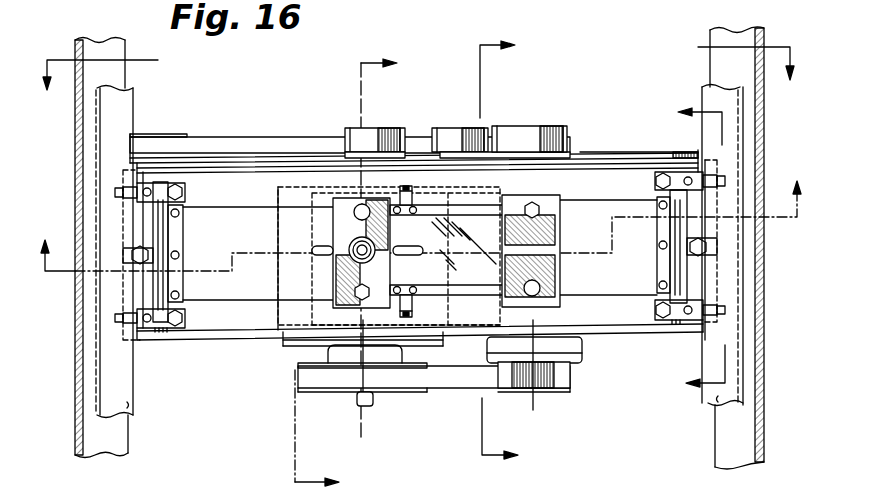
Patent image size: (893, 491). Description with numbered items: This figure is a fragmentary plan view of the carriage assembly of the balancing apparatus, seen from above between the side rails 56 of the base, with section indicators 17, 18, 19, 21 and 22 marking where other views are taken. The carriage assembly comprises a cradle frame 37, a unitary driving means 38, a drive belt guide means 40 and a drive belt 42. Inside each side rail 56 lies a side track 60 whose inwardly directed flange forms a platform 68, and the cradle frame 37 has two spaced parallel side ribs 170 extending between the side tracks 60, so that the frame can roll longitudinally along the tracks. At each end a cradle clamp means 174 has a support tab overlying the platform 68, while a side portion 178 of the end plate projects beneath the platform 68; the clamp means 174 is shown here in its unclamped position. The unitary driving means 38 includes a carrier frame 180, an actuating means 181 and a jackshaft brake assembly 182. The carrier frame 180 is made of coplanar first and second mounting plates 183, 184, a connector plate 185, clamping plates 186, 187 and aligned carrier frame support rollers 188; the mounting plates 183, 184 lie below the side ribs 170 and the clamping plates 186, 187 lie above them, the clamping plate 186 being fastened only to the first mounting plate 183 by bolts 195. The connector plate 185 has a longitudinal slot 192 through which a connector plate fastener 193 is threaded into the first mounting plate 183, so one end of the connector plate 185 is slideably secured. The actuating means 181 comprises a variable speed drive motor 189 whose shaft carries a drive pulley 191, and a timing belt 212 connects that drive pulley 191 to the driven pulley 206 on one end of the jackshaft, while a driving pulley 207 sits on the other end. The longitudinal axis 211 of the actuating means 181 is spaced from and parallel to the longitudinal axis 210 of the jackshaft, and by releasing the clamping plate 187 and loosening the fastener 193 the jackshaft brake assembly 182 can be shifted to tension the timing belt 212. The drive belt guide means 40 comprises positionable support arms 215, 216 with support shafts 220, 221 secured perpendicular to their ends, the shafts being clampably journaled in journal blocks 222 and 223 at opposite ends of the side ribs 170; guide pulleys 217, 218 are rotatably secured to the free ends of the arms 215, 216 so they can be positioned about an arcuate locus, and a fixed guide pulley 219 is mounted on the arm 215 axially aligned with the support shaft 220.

The cradle frame 37 is at (242, 345).
The unitary driving means 38 is at (438, 420).
The drive belt guide means 40 is at (335, 106).
The drive belt 42 is at (252, 141).
The side rails 56 is at (78, 358).
The side tracks 60 is at (110, 383).
The platform 68 is at (130, 408).
The side ribs 170 is at (217, 178).
The cradle clamp means 174 is at (118, 247).
The side portion 178 is at (123, 292).
The carrier frame 180 is at (545, 185).
The actuating means 181 is at (350, 400).
The jackshaft brake assembly 182 is at (596, 345).
The first mounting plate 183 is at (298, 266).
The second mounting plate 184 is at (580, 299).
The connector plate 185 is at (320, 277).
The clamping plate 186 is at (342, 231).
The clamping plate 187 is at (552, 228).
The carrier frame support rollers 188 is at (415, 194).
The variable speed drive motor 189 is at (288, 348).
The drive pulley 191 is at (408, 392).
The slot 192 is at (394, 247).
The connector plate fastener 193 is at (370, 255).
The bolts 195 is at (359, 200).
The driven pulley 206 is at (558, 386).
The driving pulley 207 is at (520, 128).
The longitudinal axis 210 is at (537, 398).
The longitudinal axis 211 is at (362, 422).
The timing belt 212 is at (475, 380).
The support arm 215 is at (272, 160).
The support arm 216 is at (636, 153).
The guide pulley 217 is at (387, 128).
The guide pulley 218 is at (457, 128).
The fixed guide pulley 219 is at (155, 134).
The support shaft 220 is at (166, 237).
The support shaft 221 is at (670, 230).
The journal blocks 222 is at (185, 191).
The journal blocks 223 is at (655, 181).
The section line 17- 17 is at (417, 214).
The section line 18- 18 is at (683, 250).
The section line 19- 19 is at (361, 272).
The section line 21- 21 is at (514, 255).
The section line 22- 22 is at (92, 89).